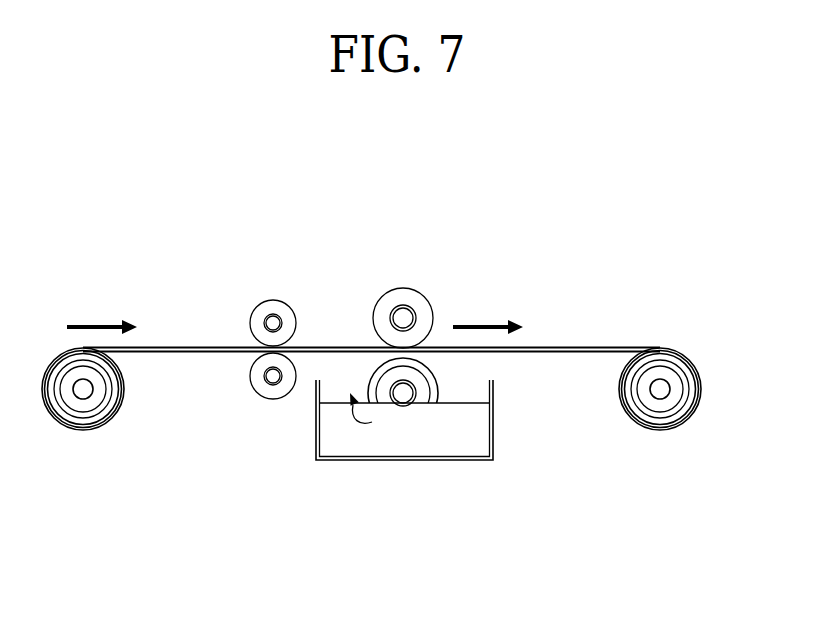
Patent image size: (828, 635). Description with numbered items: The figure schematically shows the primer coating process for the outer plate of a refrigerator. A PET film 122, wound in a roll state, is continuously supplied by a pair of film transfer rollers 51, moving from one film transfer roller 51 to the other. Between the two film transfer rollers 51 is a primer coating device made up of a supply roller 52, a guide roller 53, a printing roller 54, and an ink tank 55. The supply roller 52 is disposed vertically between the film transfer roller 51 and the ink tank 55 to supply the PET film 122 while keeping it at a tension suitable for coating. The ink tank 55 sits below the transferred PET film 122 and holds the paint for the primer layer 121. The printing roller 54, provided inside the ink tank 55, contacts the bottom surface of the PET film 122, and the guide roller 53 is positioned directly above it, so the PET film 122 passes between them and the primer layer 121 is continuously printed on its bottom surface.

The film transfer roller 51 is at (91, 398).
The supply roller 52 is at (281, 366).
The guide roller 53 is at (418, 284).
The printing roller 54 is at (442, 387).
The ink tank 55 is at (488, 462).
The primer layer 121 is at (587, 353).
The PET film 122 is at (160, 346).